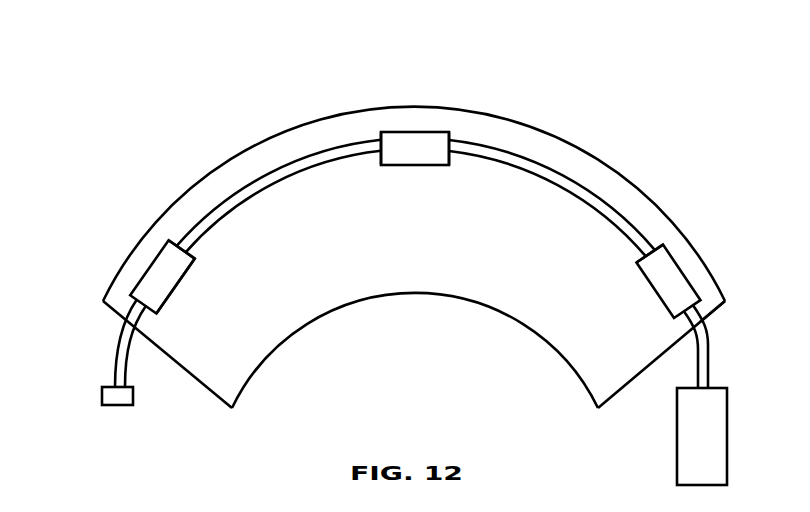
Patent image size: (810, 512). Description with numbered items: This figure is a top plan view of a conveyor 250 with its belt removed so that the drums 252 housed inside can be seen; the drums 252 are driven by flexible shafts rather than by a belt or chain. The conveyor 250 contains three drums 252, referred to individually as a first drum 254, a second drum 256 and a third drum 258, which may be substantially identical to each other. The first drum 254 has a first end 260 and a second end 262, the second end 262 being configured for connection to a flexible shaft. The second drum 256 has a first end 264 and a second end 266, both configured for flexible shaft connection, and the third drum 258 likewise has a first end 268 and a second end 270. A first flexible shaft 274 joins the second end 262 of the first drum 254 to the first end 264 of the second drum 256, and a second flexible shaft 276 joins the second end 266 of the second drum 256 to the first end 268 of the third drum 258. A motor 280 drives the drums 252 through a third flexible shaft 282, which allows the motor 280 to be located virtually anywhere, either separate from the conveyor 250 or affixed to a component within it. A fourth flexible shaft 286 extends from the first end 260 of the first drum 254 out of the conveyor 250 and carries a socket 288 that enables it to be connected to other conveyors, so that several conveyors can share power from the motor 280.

The conveyor 250 is at (203, 85).
The drums 252 is at (130, 305).
The first drum 254 is at (154, 261).
The second drum 256 is at (417, 133).
The third drum 258 is at (672, 256).
The first end 260 is at (156, 314).
The second end 262 is at (196, 258).
The first end 264 is at (380, 162).
The second end 266 is at (451, 163).
The first end 268 is at (637, 261).
The second end 270 is at (716, 307).
The first flexible shaft 274 is at (314, 154).
The second flexible shaft 276 is at (576, 181).
The motor 280 is at (677, 447).
The third flexible shaft 282 is at (710, 363).
The fourth flexible shaft 286 is at (113, 362).
The socket 288 is at (133, 397).